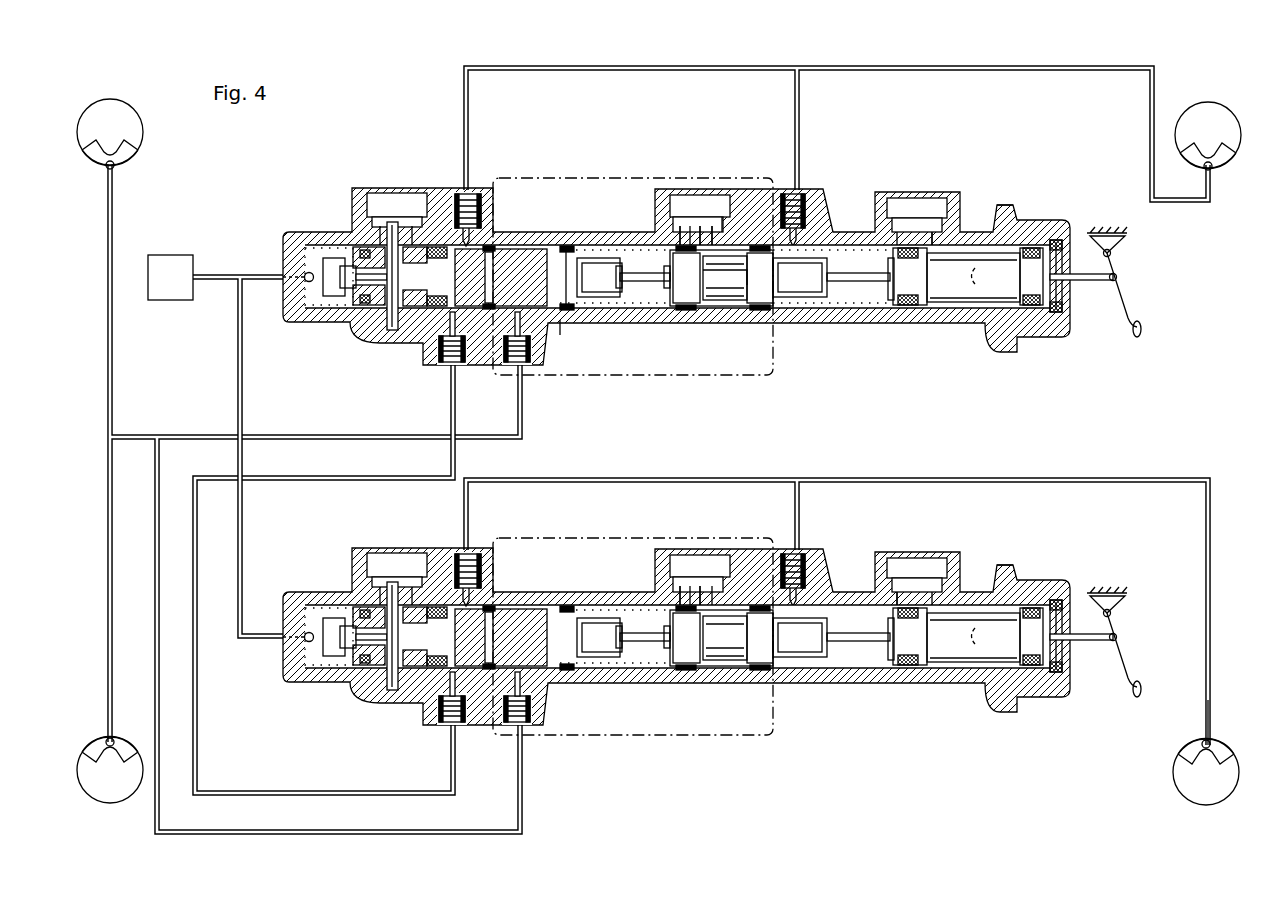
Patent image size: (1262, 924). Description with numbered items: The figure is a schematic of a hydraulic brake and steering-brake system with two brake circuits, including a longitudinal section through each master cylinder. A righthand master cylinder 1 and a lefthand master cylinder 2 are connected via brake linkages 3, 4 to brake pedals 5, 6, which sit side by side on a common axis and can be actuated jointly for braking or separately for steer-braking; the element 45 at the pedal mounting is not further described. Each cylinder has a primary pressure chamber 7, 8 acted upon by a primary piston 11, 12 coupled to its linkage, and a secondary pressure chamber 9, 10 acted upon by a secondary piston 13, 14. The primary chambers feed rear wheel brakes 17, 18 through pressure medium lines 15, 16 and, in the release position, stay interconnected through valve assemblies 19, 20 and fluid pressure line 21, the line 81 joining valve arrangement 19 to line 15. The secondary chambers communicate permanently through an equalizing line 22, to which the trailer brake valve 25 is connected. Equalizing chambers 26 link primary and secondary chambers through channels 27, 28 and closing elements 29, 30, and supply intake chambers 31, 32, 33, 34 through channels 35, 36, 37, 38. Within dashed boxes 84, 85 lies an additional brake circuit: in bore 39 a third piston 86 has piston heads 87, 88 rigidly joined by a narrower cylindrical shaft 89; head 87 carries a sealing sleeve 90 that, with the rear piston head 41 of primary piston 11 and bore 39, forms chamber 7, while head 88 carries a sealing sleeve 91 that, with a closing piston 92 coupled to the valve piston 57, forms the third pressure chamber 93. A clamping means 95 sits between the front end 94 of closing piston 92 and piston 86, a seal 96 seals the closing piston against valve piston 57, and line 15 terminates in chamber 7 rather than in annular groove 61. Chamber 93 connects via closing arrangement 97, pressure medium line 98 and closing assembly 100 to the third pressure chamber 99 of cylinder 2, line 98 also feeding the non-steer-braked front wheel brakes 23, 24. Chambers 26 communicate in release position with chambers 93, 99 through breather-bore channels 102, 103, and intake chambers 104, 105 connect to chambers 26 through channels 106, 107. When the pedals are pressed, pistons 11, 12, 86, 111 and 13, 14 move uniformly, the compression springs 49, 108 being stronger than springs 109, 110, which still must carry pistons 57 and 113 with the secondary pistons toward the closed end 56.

The righthand master cylinder 1 is at (295, 212).
The lefthand master cylinder 2 is at (667, 618).
The righthand brake linkage 3 is at (1093, 282).
The lefthand brake linkage 4 is at (1088, 642).
The brake pedal 5 is at (1142, 330).
The brake pedal 6 is at (1143, 661).
The primary pressure chamber 7 is at (878, 300).
The primary pressure chamber 8 is at (860, 676).
The secondary pressure chamber 9 is at (315, 318).
The secondary pressure chamber 10 is at (290, 647).
The primary piston 11 is at (950, 305).
The primary piston 12 is at (968, 671).
The secondary piston 13 is at (365, 312).
The secondary piston 14 is at (358, 671).
The righthand pressure medium line 15 is at (797, 110).
The lefthand pressure medium line 16 is at (797, 510).
The righthand rear wheel brake 17 is at (1214, 172).
The lefthand rear wheel brake 18 is at (1212, 742).
The valve assembly 19 is at (458, 200).
The valve assembly 20 is at (449, 557).
The fluid pressure line 21 is at (453, 414).
The equalizing line 22 is at (240, 378).
The front wheel brake 23 is at (118, 172).
The front wheel brake 24 is at (116, 740).
The trailer brake valve 25 is at (168, 256).
The equalizing chamber 26 is at (405, 200).
The channel 27 is at (898, 230).
The channel 28 is at (903, 550).
The closing element 29 is at (338, 258).
The closing element 30 is at (324, 672).
The intake chamber 31 is at (980, 240).
The intake chamber 32 is at (990, 554).
The intake chamber 33 is at (396, 330).
The intake chamber 34 is at (393, 666).
The channel 35 is at (935, 240).
The channel 36 is at (910, 557).
The channel 37 is at (395, 205).
The channel 38 is at (366, 561).
The bore 39 is at (815, 308).
The rear piston head 41 is at (912, 305).
The pedal bearing 45 is at (1065, 240).
The compression spring 49 is at (855, 290).
The closed end 56 is at (290, 258).
The valve piston 57 is at (470, 365).
The annular groove 61 is at (540, 248).
The pressure fluid line 81 is at (660, 70).
The square box 84 is at (632, 178).
The square box 85 is at (633, 619).
The third piston 86 is at (722, 300).
The piston head 87 is at (724, 232).
The piston head 88 is at (692, 232).
The cylindrical shaft 89 is at (725, 300).
The sealing sleeve 90 is at (770, 303).
The sealing sleeve 91 is at (685, 305).
The closing piston 92 is at (572, 310).
The third pressure chamber 93 is at (645, 300).
The front end 94 is at (575, 248).
The clamping means 95 is at (630, 292).
The seal 96 is at (560, 248).
The closing arrangement 97 is at (530, 365).
The pressure medium line 98 is at (128, 437).
The third pressure chamber 99 is at (643, 680).
The closing assembly 100 is at (498, 670).
The channel 102 is at (682, 232).
The channel 103 is at (636, 579).
The intake chamber 104 is at (714, 232).
The intake chamber 105 is at (730, 557).
The channel 106 is at (702, 232).
The channel 107 is at (700, 557).
The compression spring 108 is at (800, 676).
The compression spring 109 is at (597, 325).
The compression spring 110 is at (615, 672).
The piston 111 is at (721, 670).
The piston 113 is at (484, 722).